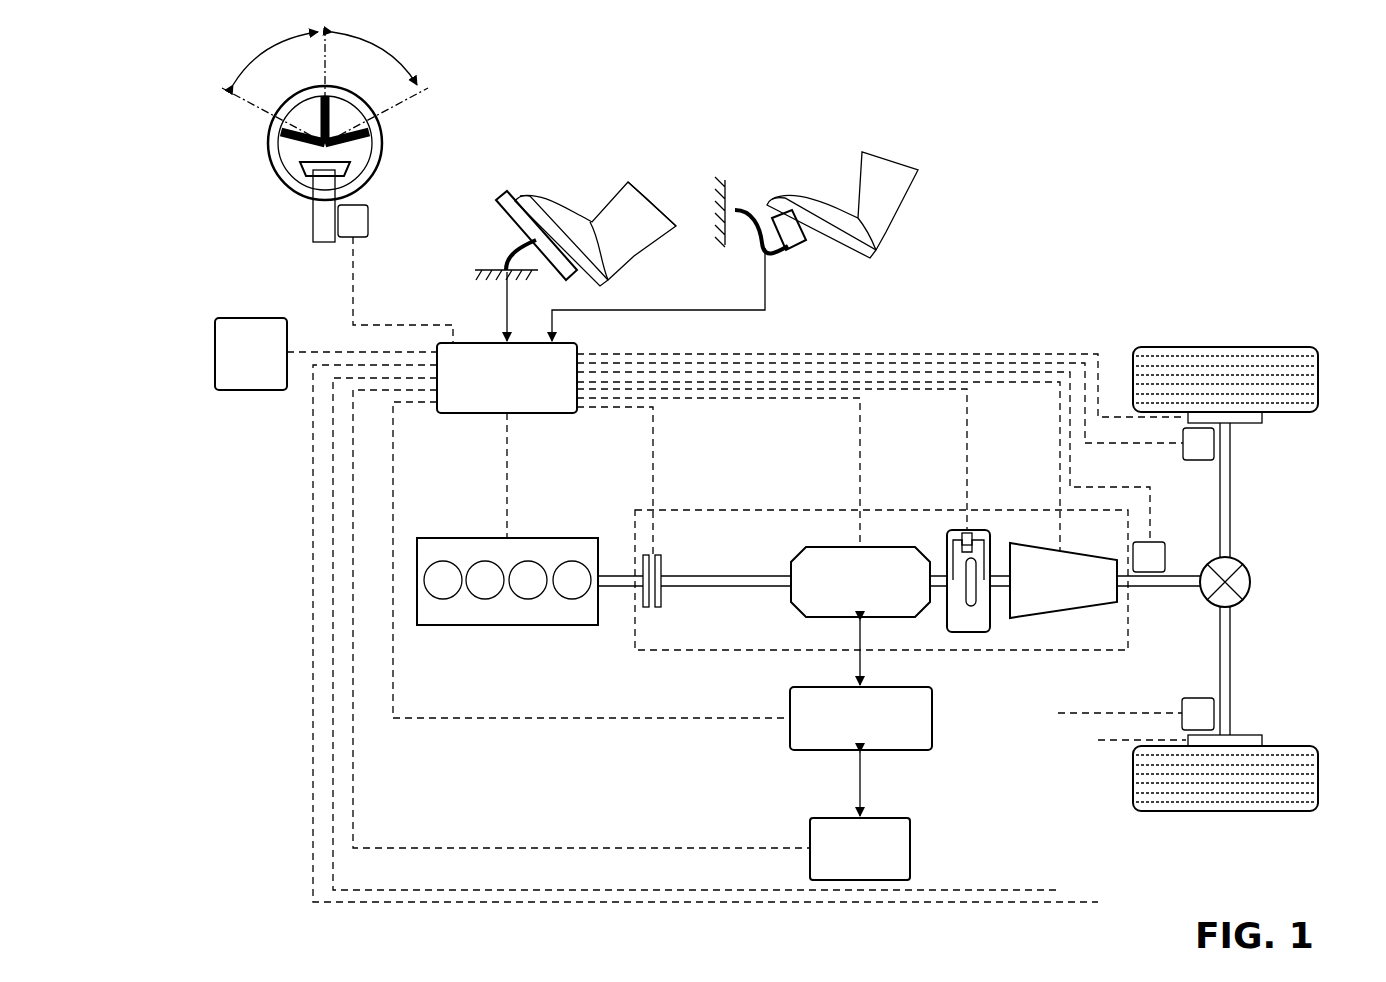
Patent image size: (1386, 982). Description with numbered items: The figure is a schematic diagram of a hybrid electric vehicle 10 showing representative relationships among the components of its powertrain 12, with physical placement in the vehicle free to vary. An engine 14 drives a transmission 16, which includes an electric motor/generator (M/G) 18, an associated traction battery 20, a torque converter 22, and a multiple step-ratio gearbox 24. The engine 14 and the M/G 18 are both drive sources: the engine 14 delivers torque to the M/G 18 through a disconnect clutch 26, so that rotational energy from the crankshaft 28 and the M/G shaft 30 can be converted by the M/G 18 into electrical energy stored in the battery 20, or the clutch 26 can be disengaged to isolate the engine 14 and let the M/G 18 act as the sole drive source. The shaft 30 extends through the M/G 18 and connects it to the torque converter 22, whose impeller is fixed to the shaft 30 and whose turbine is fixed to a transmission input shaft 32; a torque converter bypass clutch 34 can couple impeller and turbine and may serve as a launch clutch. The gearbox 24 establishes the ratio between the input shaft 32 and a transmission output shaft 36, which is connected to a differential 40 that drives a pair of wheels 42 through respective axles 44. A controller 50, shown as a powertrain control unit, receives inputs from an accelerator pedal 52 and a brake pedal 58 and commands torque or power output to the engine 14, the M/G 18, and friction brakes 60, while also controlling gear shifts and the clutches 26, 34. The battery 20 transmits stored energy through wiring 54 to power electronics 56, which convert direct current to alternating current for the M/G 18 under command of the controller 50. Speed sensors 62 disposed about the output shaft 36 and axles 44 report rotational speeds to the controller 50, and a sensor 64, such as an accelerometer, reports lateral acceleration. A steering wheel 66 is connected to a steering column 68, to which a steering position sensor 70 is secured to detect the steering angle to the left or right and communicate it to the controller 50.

The hybrid electric vehicle 10 is at (1003, 266).
The powertrain 12 is at (642, 746).
The engine 14 is at (465, 538).
The transmission 16 is at (930, 510).
The electric motor/generator (M/G) 18 is at (795, 547).
The traction battery 20 is at (910, 848).
The torque converter 22 is at (965, 632).
The gearbox 24 is at (1066, 615).
The disconnect clutch 26 is at (660, 555).
The crankshaft 28 is at (632, 575).
The M/G shaft 30 is at (740, 575).
The transmission input shaft 32 is at (1012, 548).
The torque converter bypass clutch 34 is at (968, 533).
The transmission output shaft 36 is at (1180, 575).
The differential 40 is at (1252, 580).
The wheels 42 is at (1218, 347).
The axles 44 is at (1233, 490).
The controller 50 is at (485, 343).
The accelerator pedal 52 is at (505, 230).
The wiring 54 is at (863, 790).
The power electronics 56 is at (932, 718).
The brake pedal 58 is at (788, 250).
The friction brakes 60 is at (1262, 420).
The speed sensors 62 is at (1183, 452).
The sensor 64 is at (235, 318).
The steering wheel 66 is at (272, 163).
The steering column 68 is at (313, 222).
The steering position sensor 70 is at (368, 222).